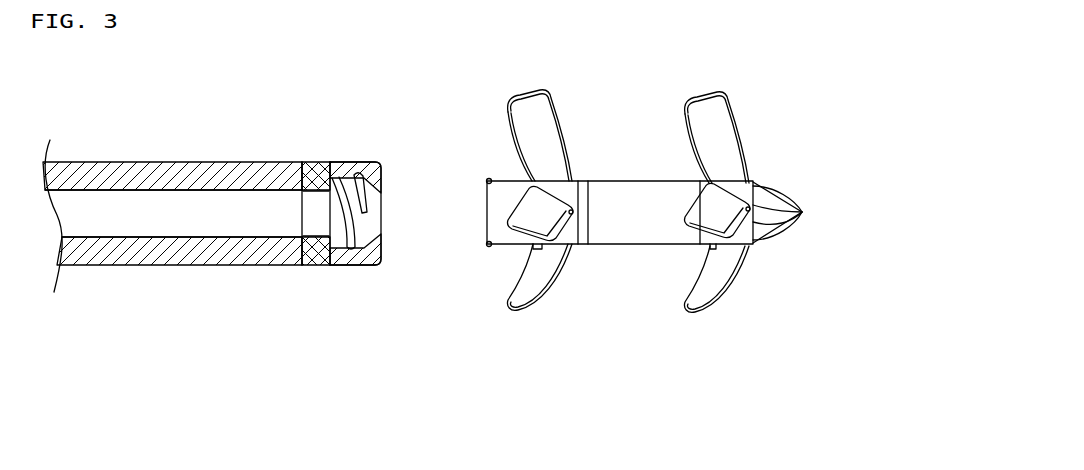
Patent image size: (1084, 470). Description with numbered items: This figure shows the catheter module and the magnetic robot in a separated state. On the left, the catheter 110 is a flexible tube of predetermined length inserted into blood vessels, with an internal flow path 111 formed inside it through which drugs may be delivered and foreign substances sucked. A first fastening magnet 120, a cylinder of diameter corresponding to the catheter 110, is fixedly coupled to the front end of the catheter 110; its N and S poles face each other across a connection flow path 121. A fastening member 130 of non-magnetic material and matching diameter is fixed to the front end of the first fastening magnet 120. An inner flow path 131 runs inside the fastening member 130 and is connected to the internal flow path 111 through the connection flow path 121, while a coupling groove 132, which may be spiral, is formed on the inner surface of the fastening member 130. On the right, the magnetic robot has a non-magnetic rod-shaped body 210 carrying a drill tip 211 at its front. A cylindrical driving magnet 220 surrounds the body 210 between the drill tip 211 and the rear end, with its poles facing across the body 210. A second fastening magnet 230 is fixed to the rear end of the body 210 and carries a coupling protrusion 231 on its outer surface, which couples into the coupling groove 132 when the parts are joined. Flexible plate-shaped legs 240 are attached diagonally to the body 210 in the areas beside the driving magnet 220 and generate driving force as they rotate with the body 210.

The catheter 110 is at (237, 162).
The internal flow path 111 is at (162, 218).
The first fastening magnet 120 is at (317, 162).
The connection flow path 121 is at (315, 220).
The fastening member 130 is at (352, 162).
The inner flow path 131 is at (352, 195).
The coupling groove 132 is at (345, 227).
The body 210 is at (740, 187).
The drill tip 211 is at (797, 197).
The driving magnet 220 is at (627, 193).
The second fastening magnet 230 is at (503, 190).
The coupling protrusion 231 is at (490, 252).
The leg 240 is at (732, 283).